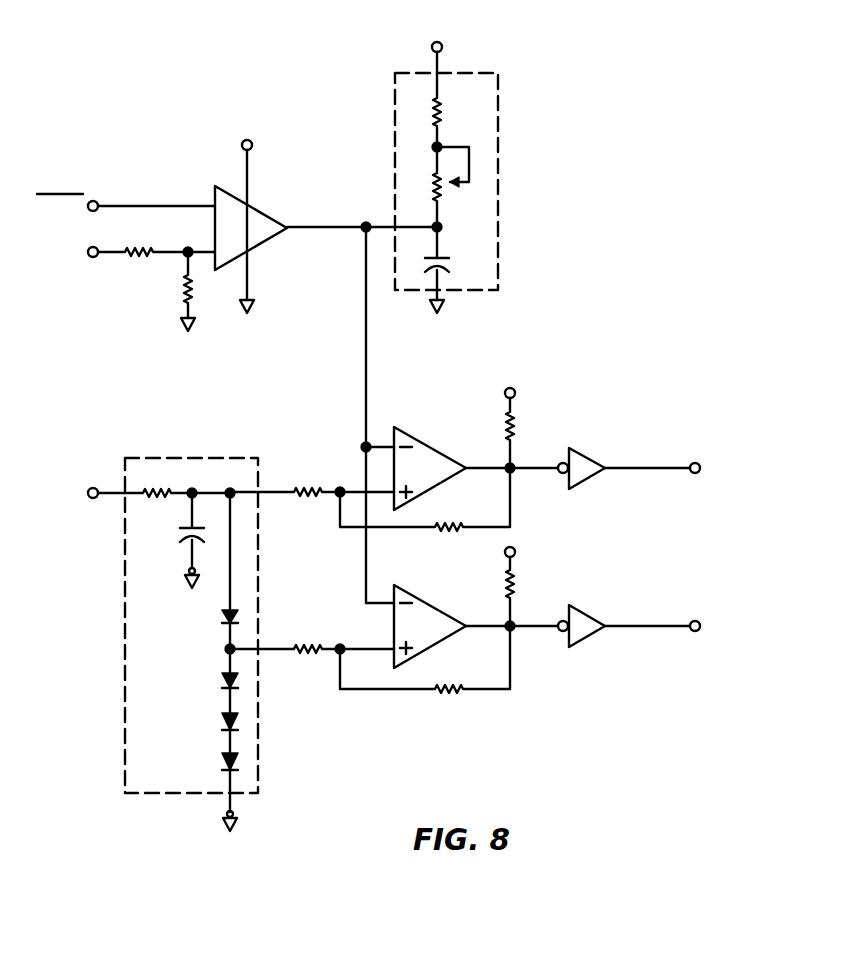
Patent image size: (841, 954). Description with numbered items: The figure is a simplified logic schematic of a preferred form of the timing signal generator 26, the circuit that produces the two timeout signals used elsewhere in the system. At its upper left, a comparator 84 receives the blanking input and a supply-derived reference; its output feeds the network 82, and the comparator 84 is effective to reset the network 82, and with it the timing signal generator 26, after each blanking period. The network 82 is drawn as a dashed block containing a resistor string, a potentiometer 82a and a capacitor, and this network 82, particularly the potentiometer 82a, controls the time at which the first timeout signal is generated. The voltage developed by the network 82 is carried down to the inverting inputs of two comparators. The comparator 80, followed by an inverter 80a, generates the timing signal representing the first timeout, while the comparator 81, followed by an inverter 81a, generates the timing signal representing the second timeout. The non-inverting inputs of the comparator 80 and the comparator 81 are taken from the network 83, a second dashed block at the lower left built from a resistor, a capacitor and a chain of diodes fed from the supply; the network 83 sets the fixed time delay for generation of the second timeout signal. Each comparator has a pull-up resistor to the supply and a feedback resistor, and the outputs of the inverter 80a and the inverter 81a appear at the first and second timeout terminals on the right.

The timing signal generator 26 is at (648, 290).
The comparator 80 is at (422, 608).
The inverter 80a is at (582, 613).
The comparator 81 is at (422, 450).
The inverter 81a is at (584, 452).
The network 82 is at (465, 168).
The potentiometer 82a is at (426, 176).
The network 83 is at (130, 727).
The comparator 84 is at (260, 220).